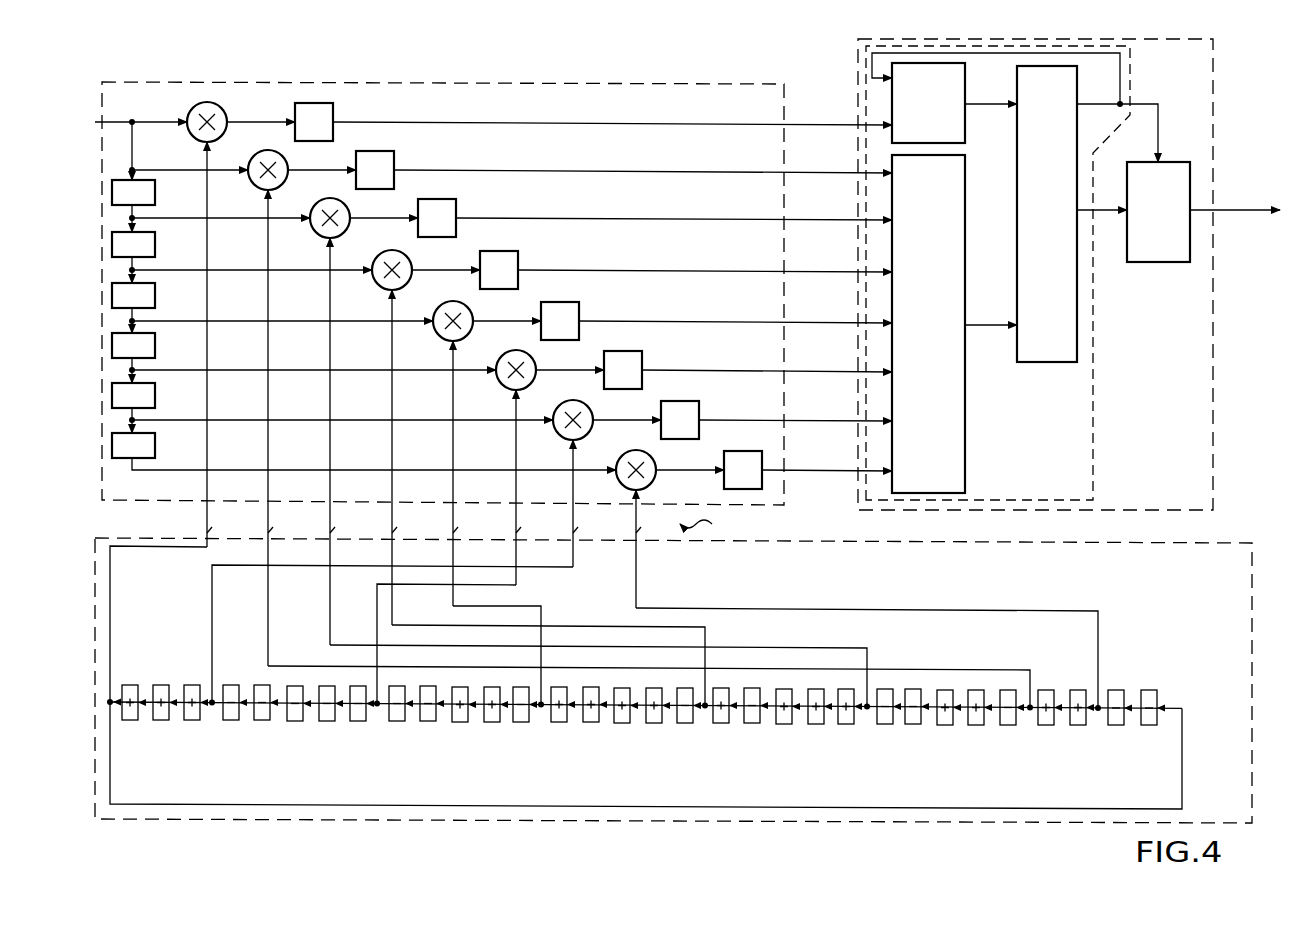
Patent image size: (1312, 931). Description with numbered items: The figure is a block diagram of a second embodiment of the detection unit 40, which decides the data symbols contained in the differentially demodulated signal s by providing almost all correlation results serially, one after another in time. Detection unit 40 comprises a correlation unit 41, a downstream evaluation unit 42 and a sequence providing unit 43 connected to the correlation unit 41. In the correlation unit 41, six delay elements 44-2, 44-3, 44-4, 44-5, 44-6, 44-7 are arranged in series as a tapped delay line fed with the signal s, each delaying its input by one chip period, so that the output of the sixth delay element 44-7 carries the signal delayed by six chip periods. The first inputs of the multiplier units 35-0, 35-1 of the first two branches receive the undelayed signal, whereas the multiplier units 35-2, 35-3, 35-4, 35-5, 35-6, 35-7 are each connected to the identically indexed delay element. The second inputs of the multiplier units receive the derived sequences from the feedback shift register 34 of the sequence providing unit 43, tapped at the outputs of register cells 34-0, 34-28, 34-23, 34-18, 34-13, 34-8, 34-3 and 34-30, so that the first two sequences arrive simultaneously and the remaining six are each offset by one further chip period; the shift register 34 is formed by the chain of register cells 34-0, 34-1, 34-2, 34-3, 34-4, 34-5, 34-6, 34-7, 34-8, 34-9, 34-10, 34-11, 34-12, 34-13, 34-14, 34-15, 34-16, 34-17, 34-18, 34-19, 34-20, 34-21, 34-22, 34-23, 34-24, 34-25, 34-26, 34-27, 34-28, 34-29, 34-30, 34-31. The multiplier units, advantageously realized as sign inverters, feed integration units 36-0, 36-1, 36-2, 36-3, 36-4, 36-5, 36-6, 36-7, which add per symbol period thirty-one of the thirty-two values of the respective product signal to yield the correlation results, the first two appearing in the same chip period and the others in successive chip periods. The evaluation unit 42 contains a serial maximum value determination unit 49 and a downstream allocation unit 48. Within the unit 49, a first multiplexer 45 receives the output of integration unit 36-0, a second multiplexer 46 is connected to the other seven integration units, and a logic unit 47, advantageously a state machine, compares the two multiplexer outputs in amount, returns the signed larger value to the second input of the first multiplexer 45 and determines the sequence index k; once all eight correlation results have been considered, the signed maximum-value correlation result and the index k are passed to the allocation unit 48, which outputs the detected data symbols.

The detection unit 40 is at (838, 521).
The correlation unit 41 is at (666, 78).
The evaluation unit 42 is at (858, 70).
The sequence providing unit 43 is at (1217, 540).
The first delay element 44-2 is at (163, 178).
The second delay element 44-3 is at (163, 230).
The third delay element 44-4 is at (163, 281).
The fourth delay element 44-5 is at (163, 331).
The fifth delay element 44-6 is at (163, 381).
The sixth delay element 44-7 is at (163, 431).
The multiplier unit 35-0 is at (226, 127).
The multiplier unit 35-1 is at (287, 175).
The multiplier unit 35-2 is at (349, 223).
The multiplier unit 35-3 is at (411, 275).
The multiplier unit 35-4 is at (472, 326).
The multiplier unit 35-5 is at (535, 375).
The multiplier unit 35-6 is at (592, 425).
The multiplier unit 35-7 is at (655, 475).
The integration unit 36-0 is at (329, 103).
The integration unit 36-1 is at (390, 151).
The integration unit 36-2 is at (452, 199).
The integration unit 36-3 is at (514, 251).
The integration unit 36-4 is at (575, 302).
The integration unit 36-5 is at (638, 351).
The integration unit 36-6 is at (695, 401).
The integration unit 36-7 is at (722, 452).
The first multiplexer 45 is at (965, 130).
The second multiplexer 46 is at (965, 415).
The logic unit 47 is at (1055, 363).
The allocation unit 48 is at (1157, 262).
The serial maximum value determination unit 49 is at (1093, 462).
The feedback shift register 34 is at (1199, 710).
The register cell 34-0 is at (130, 720).
The shift register stage 34-1 is at (161, 720).
The shift register stage 34-2 is at (192, 720).
The register cell 34-3 is at (231, 720).
The shift register stage 34-4 is at (262, 720).
The shift register stage 34-5 is at (295, 721).
The shift register stage 34-6 is at (327, 721).
The shift register stage 34-7 is at (358, 721).
The register cell 34-8 is at (397, 721).
The shift register stage 34-9 is at (428, 721).
The shift register stage 34-10 is at (460, 722).
The shift register stage 34-11 is at (492, 722).
The shift register stage 34-12 is at (521, 722).
The register cell 34-13 is at (559, 722).
The shift register stage 34-14 is at (591, 722).
The shift register stage 34-15 is at (622, 723).
The shift register stage 34-16 is at (654, 723).
The shift register stage 34-17 is at (685, 723).
The register cell 34-18 is at (721, 723).
The shift register stage 34-19 is at (752, 723).
The register cell 34-20 is at (784, 724).
The shift register stage 34-21 is at (816, 724).
The shift register stage 34-22 is at (846, 724).
The register cell 34-23 is at (885, 724).
The register cell 34-24 is at (913, 724).
The shift register stage 34-25 is at (945, 725).
The shift register stage 34-26 is at (976, 725).
The shift register stage 34-27 is at (1008, 725).
The register cell 34-28 is at (1046, 725).
The shift register stage 34-29 is at (1078, 725).
The register cell 34-30 is at (1116, 689).
The shift register stage 34-31 is at (1149, 689).